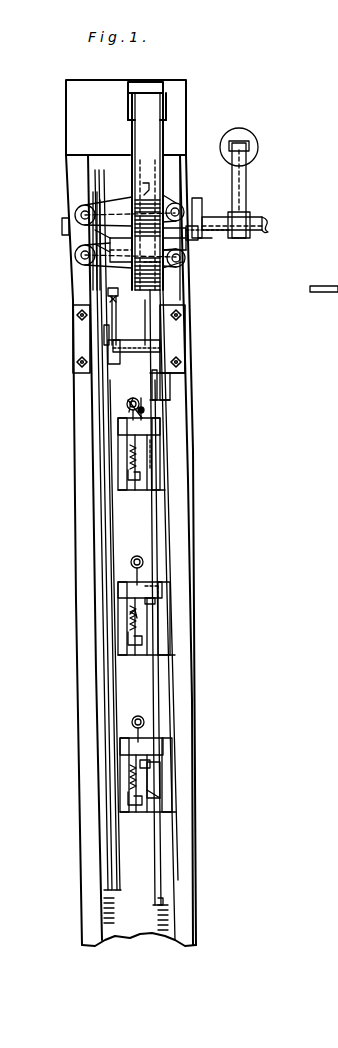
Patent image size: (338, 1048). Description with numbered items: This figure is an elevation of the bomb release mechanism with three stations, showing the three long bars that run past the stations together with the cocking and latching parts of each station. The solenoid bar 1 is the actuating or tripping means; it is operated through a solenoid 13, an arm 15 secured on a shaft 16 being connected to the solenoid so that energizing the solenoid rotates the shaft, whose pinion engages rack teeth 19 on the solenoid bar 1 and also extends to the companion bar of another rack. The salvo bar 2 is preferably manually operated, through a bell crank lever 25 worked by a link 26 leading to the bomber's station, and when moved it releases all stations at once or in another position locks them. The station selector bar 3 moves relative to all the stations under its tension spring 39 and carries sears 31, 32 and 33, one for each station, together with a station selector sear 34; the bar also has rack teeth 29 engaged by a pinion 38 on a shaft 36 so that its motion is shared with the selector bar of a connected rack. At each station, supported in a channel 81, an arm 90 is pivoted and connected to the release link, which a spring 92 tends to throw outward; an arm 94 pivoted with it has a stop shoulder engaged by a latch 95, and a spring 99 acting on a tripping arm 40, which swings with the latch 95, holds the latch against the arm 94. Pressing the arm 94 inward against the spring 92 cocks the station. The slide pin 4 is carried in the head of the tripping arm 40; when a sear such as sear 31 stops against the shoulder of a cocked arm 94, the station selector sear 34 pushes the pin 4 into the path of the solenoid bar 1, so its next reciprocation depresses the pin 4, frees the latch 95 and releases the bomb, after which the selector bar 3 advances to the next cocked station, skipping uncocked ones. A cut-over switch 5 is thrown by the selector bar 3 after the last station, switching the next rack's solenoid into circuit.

The solenoid bar 1 is at (100, 701).
The salvo bar 2 is at (115, 539).
The station selector bar 3 is at (158, 697).
The slide pin 4 is at (100, 590).
The cut-over switch 5 is at (171, 386).
The solenoid 13 is at (246, 141).
The arm 15 is at (238, 200).
The shaft 16 is at (264, 222).
The rack teeth 19 is at (90, 205).
The bell crank lever 25 is at (114, 332).
The link 26 is at (108, 292).
The rack teeth 29 is at (141, 193).
The sear 31 is at (160, 726).
The sear 32 is at (153, 546).
The sear 33 is at (144, 407).
The station selector sear 34 is at (146, 416).
The shaft 36 is at (200, 252).
The pinion 38 is at (162, 268).
The tension spring 39 is at (166, 916).
The tripping arm 40 is at (136, 450).
The channel 81 is at (190, 572).
The arm 90 is at (112, 417).
The spring 92 is at (127, 403).
The arm 94 is at (162, 778).
The latch 95 is at (152, 602).
The spring 99 is at (130, 630).